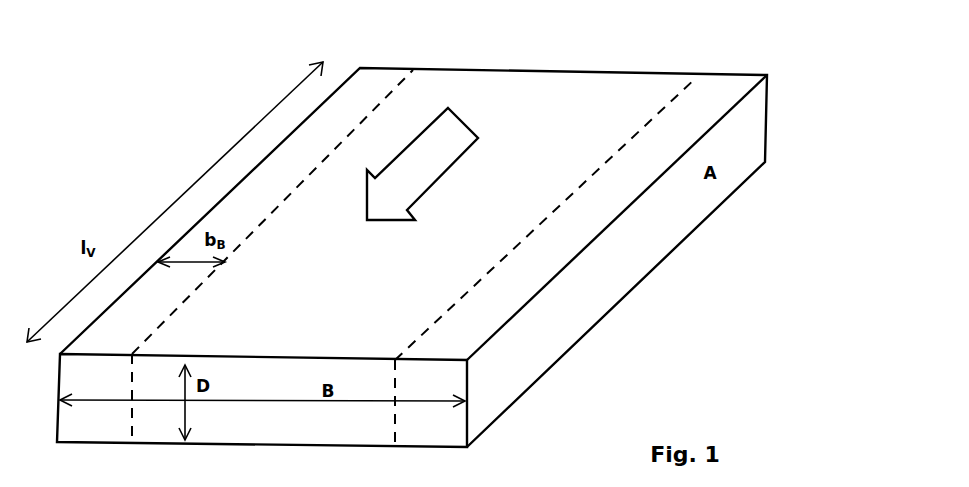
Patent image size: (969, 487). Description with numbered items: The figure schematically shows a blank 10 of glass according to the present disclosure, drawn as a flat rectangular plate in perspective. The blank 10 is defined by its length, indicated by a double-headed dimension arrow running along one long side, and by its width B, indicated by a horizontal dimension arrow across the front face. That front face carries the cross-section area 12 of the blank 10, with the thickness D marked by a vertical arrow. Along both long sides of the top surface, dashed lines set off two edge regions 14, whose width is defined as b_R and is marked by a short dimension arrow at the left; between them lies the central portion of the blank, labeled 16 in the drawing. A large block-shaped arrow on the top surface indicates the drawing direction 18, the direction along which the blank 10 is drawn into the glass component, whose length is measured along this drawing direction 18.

The blank 10 is at (621, 287).
The cross-section area 12 is at (262, 400).
The edge regions 14 is at (414, 258).
The central zone 16 is at (414, 215).
The drawing direction 18 is at (422, 164).